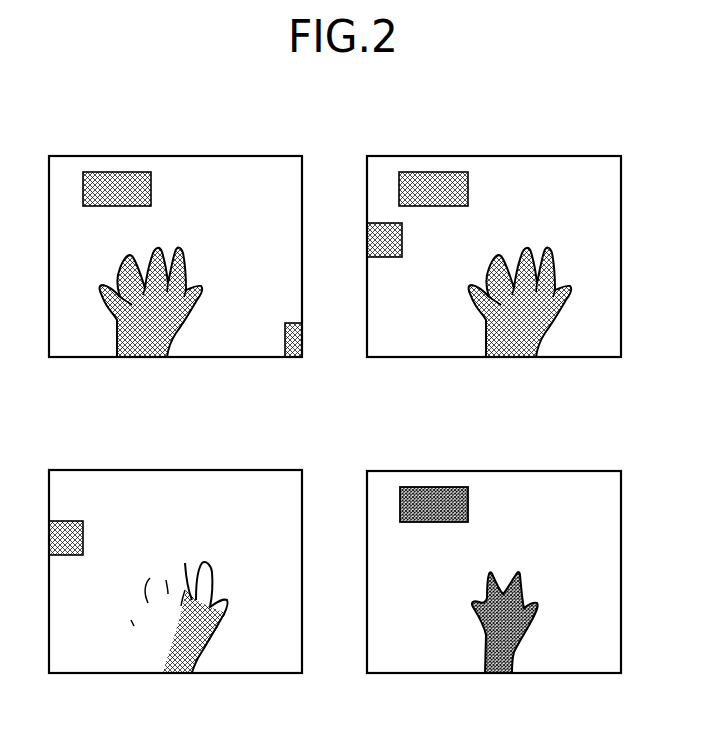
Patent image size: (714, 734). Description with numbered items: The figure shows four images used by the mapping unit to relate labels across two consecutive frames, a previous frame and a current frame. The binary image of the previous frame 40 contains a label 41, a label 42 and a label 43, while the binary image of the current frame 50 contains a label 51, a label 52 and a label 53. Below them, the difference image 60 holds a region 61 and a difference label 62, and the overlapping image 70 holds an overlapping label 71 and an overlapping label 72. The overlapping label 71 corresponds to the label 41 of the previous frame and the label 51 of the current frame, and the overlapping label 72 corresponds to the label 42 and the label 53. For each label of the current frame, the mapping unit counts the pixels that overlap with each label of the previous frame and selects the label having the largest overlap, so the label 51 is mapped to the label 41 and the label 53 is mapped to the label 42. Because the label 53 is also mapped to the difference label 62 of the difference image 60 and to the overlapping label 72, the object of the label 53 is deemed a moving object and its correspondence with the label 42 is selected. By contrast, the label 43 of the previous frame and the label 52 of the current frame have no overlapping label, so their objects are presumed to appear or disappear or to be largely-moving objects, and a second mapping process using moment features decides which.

The binary image of the frame t−1 40 is at (248, 156).
The label 41 is at (115, 172).
The label 42 is at (174, 248).
The label 43 is at (293, 323).
The binary image of the frame t 50 is at (568, 156).
The label 51 is at (431, 172).
The label 52 is at (402, 237).
The label 53 is at (571, 289).
The difference image 60 is at (248, 470).
The marker difference region 61 is at (66, 521).
The difference label 62 is at (196, 657).
The overlapping image 70 is at (568, 471).
The overlapping label 71 is at (431, 487).
The overlapping label 72 is at (513, 657).